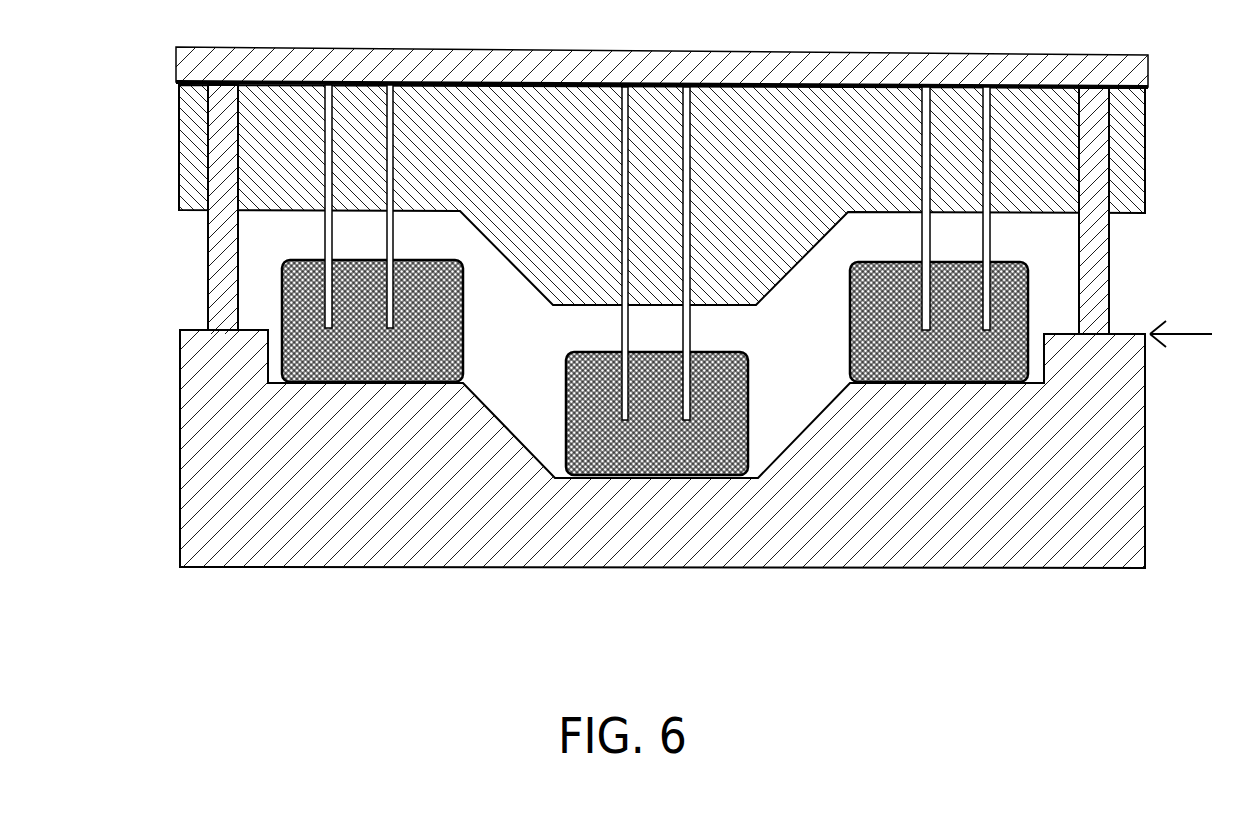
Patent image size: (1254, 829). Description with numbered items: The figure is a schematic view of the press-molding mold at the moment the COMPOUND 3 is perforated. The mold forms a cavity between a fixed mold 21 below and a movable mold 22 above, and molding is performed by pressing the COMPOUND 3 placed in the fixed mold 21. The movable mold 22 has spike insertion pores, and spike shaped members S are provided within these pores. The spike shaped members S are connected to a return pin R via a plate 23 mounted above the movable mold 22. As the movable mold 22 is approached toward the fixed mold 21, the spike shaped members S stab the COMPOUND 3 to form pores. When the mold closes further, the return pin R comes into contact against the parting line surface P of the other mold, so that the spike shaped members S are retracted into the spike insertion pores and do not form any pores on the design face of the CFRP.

The fixed mold 21 is at (317, 475).
The movable mold 22 is at (290, 160).
The plate 23 is at (230, 66).
The COMPOUND 3 is at (307, 302).
The return pin R is at (1100, 243).
The spike shaped members S is at (986, 235).
The parting line surface P is at (1196, 339).